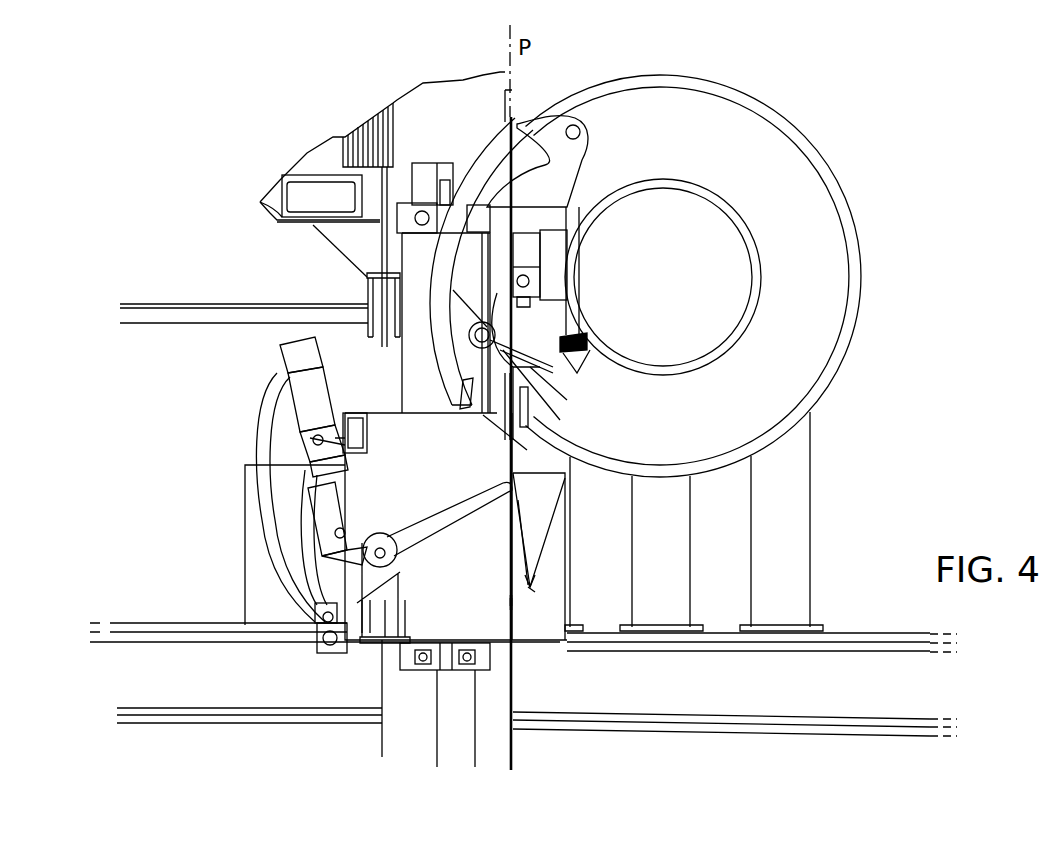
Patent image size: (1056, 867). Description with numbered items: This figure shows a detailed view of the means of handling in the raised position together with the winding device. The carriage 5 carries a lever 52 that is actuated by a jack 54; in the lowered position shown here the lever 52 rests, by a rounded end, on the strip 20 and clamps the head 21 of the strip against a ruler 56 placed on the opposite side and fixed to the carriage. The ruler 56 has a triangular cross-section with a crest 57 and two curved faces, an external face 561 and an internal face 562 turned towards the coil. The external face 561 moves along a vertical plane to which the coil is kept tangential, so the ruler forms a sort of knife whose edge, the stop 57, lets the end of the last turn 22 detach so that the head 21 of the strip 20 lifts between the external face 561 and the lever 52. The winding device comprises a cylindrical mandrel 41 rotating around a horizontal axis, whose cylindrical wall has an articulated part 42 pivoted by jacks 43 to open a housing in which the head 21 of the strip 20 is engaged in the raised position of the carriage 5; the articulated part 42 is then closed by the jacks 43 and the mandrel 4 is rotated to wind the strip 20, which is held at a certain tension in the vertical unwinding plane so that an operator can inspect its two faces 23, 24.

The mandrel 4 is at (797, 212).
The cylindrical mandrel 41 is at (848, 346).
The articulated part 42 is at (483, 163).
The jacks 43 is at (566, 360).
The head of the strip 21 is at (497, 415).
The last turn 22 is at (530, 410).
The strip 20 is at (512, 620).
The carriage 5 is at (268, 545).
The jack 54 is at (308, 392).
The lever 52 is at (462, 520).
The ruler 56 is at (533, 507).
The external face 561 is at (530, 583).
The internal face 562 is at (535, 548).
The crest 57 is at (528, 587).
The face 24 is at (508, 602).
The face 23 is at (516, 602).